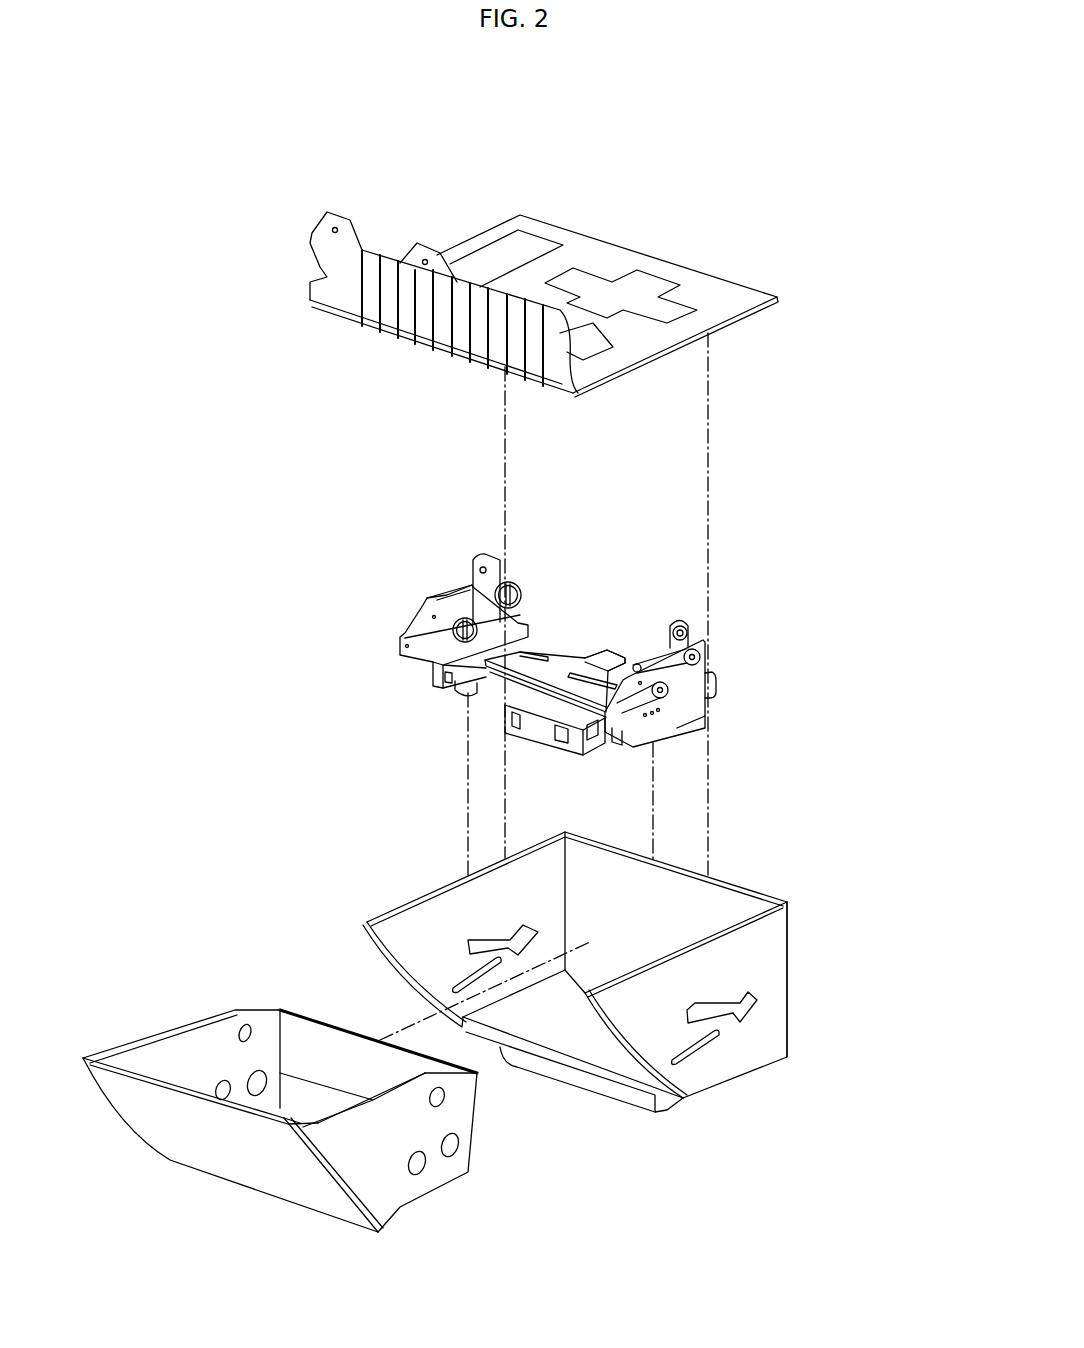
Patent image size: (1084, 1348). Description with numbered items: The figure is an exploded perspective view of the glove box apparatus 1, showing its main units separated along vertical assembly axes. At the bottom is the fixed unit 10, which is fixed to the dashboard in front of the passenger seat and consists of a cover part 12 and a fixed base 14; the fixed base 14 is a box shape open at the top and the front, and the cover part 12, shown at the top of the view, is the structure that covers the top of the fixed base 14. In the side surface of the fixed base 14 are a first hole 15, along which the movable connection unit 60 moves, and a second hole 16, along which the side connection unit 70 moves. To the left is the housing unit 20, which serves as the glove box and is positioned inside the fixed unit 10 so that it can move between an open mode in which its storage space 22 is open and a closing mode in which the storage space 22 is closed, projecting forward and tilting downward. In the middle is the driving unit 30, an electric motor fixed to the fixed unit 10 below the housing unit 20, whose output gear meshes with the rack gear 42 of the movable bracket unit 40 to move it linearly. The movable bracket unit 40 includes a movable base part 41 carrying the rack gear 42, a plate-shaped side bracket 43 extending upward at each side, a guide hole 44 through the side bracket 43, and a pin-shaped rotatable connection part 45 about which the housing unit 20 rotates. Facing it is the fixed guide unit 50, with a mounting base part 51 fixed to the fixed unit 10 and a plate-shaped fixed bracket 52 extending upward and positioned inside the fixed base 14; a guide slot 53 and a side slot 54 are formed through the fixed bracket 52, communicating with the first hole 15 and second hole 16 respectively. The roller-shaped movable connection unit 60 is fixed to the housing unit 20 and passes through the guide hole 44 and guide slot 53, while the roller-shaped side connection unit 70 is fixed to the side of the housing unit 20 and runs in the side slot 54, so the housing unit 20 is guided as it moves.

The glove box apparatus 1 is at (172, 246).
The fixed unit 10 is at (828, 904).
The cover part 12 is at (733, 298).
The fixed base 14 is at (794, 975).
The first hole 15 is at (698, 1050).
The second hole 16 is at (737, 1008).
The housing unit 20 is at (173, 1216).
The storage space 22 is at (205, 1060).
The driving unit 30 is at (543, 737).
The movable bracket unit 40 is at (603, 606).
The movable base part 41 is at (551, 646).
The rack gear 42 is at (623, 668).
The side bracket 43 is at (482, 587).
The guide hole 44 is at (528, 650).
The rotatable connection part 45 is at (687, 620).
The fixed guide unit 50 is at (430, 578).
The mounting base part 51 is at (457, 690).
The fixed bracket 52 is at (423, 620).
The guide slot 53 is at (417, 665).
The side slot 54 is at (448, 593).
The movable connection unit 60 is at (680, 700).
The side connection unit 70 is at (698, 655).